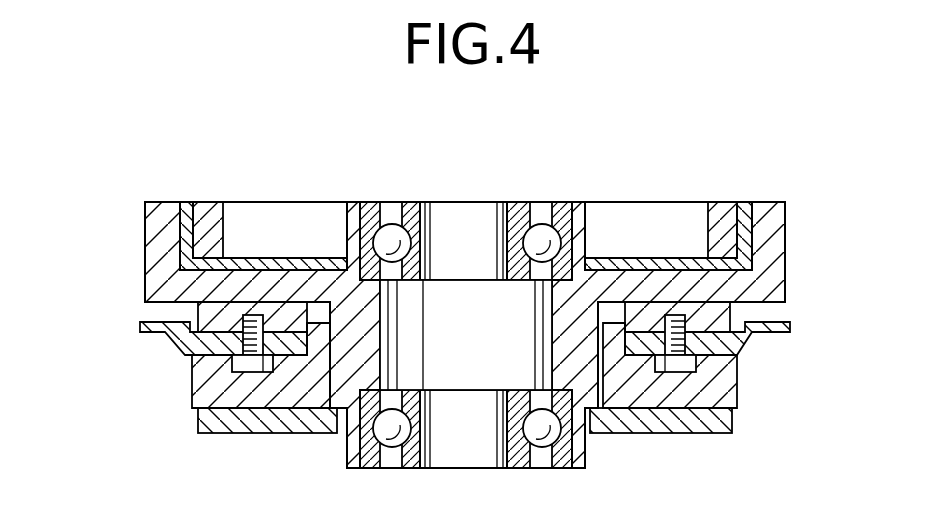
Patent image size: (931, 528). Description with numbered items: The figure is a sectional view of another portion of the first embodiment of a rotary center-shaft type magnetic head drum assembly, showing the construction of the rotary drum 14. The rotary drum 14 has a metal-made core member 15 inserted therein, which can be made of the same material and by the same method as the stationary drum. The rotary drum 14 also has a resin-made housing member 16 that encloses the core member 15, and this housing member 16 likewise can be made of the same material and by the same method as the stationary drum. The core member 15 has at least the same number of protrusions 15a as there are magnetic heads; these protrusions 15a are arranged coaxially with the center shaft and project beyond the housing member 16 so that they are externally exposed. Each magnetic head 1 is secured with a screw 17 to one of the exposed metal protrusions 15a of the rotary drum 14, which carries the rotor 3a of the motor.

The magnetic head 1 is at (200, 342).
The rotor 3a is at (210, 240).
The rotary drum 14 is at (443, 182).
The core member 15 is at (282, 327).
The protrusions 15a is at (638, 320).
The housing member 16 is at (165, 228).
The screw 17 is at (258, 367).